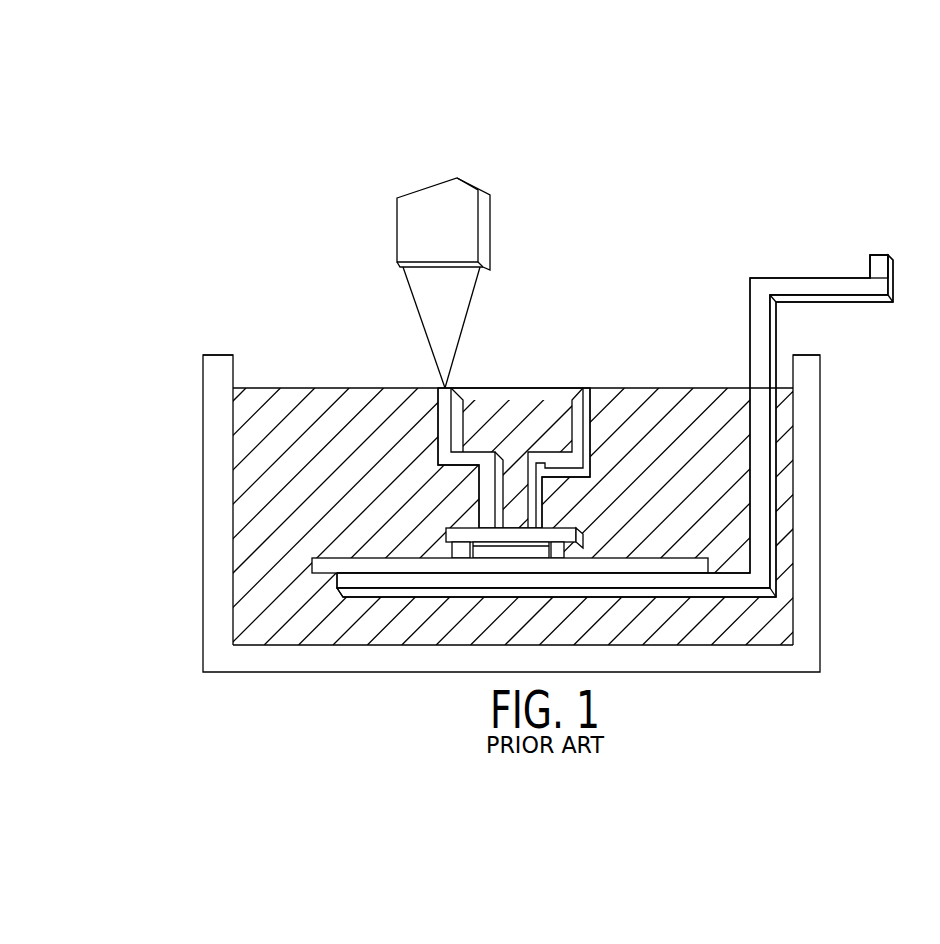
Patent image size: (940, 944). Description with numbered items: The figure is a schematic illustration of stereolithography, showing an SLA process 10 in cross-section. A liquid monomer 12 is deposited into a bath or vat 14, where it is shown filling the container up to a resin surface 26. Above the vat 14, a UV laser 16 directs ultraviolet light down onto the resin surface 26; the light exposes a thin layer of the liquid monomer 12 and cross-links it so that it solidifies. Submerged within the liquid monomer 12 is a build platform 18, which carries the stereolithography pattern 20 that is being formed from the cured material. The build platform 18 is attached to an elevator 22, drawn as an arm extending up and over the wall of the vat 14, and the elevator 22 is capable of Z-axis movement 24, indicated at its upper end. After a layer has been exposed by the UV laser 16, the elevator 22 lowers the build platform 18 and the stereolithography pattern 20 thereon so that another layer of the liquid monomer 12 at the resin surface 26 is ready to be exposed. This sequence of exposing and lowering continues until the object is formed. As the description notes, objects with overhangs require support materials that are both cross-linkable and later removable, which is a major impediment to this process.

The SLA process 10 is at (580, 99).
The liquid monomer 12 is at (280, 580).
The vat 14 is at (835, 459).
The UV laser 16 is at (372, 219).
The build platform 18 is at (647, 539).
The stereolithography pattern 20 is at (423, 443).
The elevator 22 is at (780, 262).
The Z-axis movement 24 is at (884, 240).
The resin surface 26 is at (640, 374).